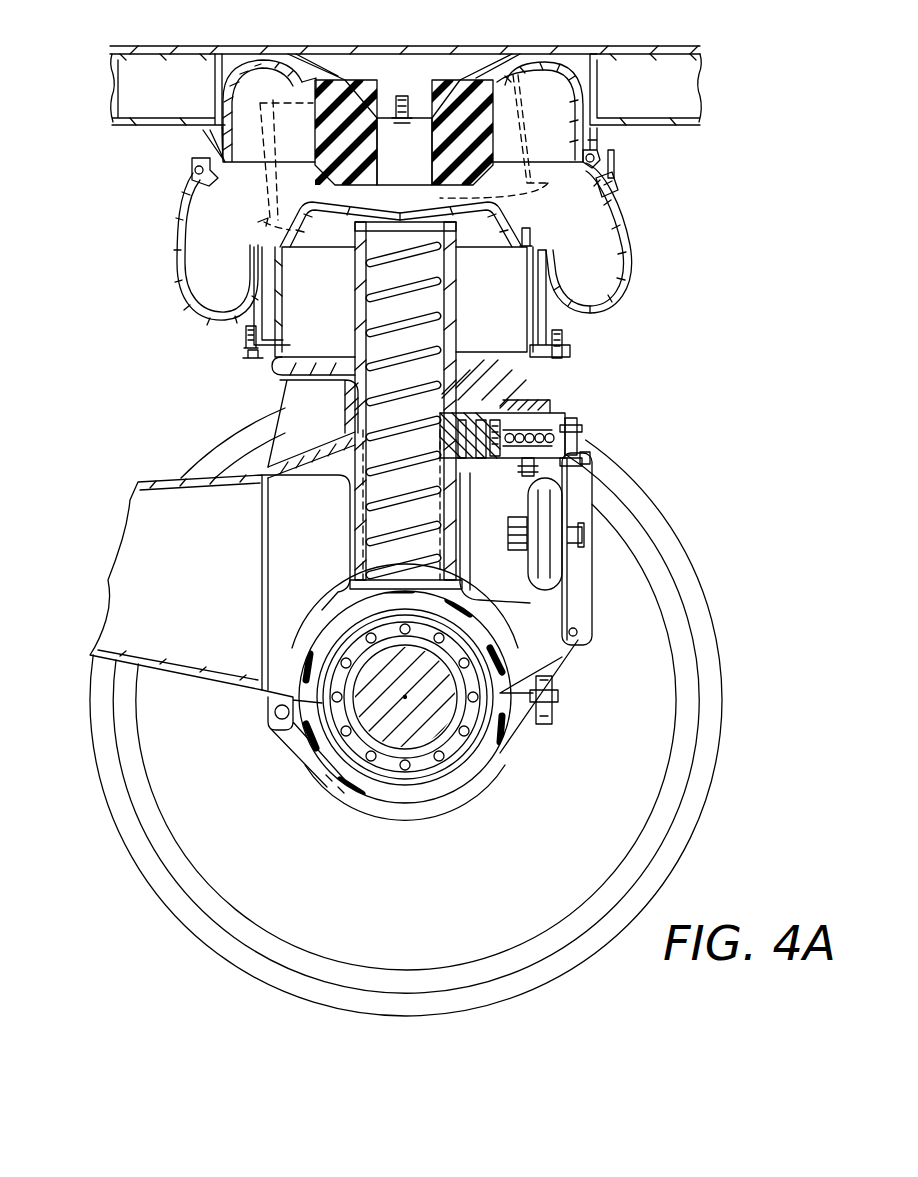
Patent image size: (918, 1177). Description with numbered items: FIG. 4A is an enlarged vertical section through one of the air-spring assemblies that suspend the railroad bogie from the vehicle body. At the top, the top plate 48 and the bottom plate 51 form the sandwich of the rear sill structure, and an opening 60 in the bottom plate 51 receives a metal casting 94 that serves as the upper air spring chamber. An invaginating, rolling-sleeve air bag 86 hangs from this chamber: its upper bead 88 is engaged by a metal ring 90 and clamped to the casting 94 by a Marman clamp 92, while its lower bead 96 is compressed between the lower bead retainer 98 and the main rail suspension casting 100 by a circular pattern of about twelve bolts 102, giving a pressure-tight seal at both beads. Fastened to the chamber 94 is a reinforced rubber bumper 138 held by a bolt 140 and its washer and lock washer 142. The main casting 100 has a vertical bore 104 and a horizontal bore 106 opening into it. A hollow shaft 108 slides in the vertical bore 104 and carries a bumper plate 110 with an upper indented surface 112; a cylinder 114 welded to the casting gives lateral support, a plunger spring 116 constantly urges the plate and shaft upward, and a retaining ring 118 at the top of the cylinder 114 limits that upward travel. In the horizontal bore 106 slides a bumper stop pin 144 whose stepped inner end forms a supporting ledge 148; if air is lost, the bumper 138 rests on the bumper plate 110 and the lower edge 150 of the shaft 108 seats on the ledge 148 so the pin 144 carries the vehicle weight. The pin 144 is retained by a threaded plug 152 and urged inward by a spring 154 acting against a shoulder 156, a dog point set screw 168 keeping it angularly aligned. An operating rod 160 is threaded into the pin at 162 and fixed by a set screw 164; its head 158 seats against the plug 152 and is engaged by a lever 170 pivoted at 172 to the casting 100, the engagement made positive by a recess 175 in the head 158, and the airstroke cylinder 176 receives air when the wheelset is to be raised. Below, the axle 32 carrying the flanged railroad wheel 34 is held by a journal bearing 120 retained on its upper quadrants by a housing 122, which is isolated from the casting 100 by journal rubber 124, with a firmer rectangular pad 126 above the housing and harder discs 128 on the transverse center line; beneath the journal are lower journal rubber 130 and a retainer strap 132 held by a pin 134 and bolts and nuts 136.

The top plate 48 is at (180, 46).
The opening 60 is at (234, 62).
The metal casting 94 is at (578, 58).
The bottom plate 51 is at (162, 130).
The washer and lock washer 142 is at (416, 78).
The reinforced rubber bumper 138 is at (488, 112).
The bolt 140 is at (410, 130).
The upper bead 88 is at (605, 160).
The Marman clamp 92 is at (618, 168).
The metal ring 90 is at (620, 190).
The upper indented surface 112 is at (340, 204).
The bumper plate 110 is at (262, 222).
The retaining ring 118 is at (520, 224).
The cylinder 114 is at (532, 243).
The invaginating air bag 86 is at (630, 240).
The hollow shaft 108 is at (356, 284).
The plunger spring 116 is at (447, 278).
The lower bead 96 is at (250, 324).
The lower bead retainer 98 is at (246, 340).
The bolts 102 is at (248, 360).
The shoulder 156 is at (500, 412).
The set screw 164 is at (483, 420).
The threaded connection 162 is at (470, 440).
The horizontal bore 106 is at (530, 402).
The spring 154 is at (520, 424).
The plug 152 is at (566, 425).
The lower edge 150 is at (270, 422).
The main rail suspension casting 100 is at (320, 384).
The supporting ledge 148 is at (356, 452).
The head 158 is at (582, 430).
The recess 175 is at (582, 460).
The dog point set screw 168 is at (592, 462).
The vertical bore 104 is at (346, 490).
The operating rod 160 is at (522, 466).
The bumper stop pin 144 is at (516, 506).
The airstroke cylinder 176 is at (536, 566).
The lever 170 is at (572, 576).
The flanged railroad wheel 34 is at (648, 612).
The rectangular pad 126 is at (346, 612).
The journal rubber 124 is at (320, 650).
The pivot 172 is at (580, 630).
The discs 128 is at (556, 650).
The housing 122 is at (296, 690).
The pin 134 is at (278, 720).
The bolts and nuts 136 is at (558, 710).
The lower journal rubber 130 is at (336, 745).
The journal bearing 120 is at (456, 746).
The axle 32 is at (395, 775).
The retainer strap 132 is at (401, 790).